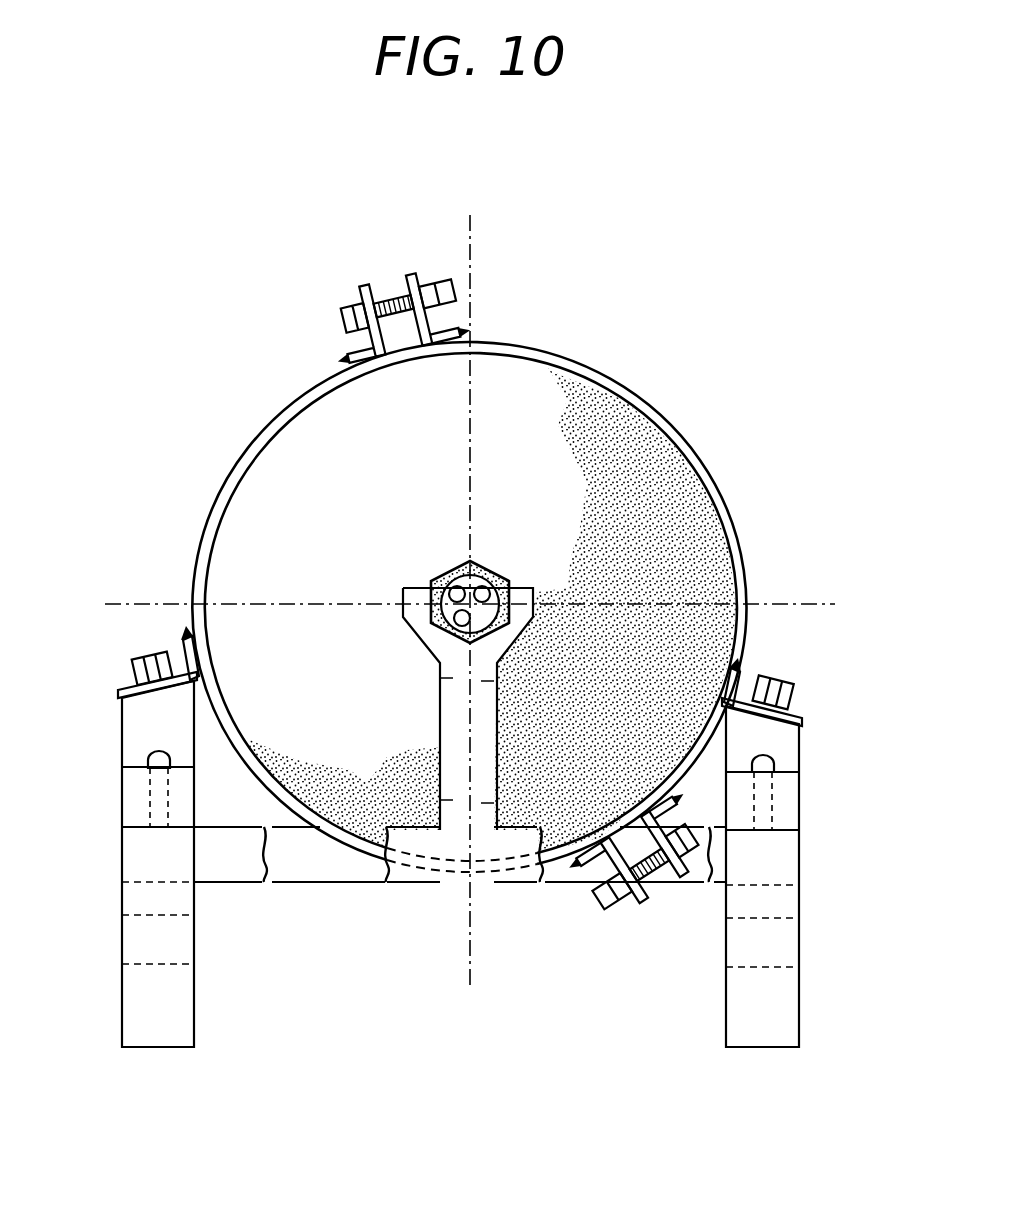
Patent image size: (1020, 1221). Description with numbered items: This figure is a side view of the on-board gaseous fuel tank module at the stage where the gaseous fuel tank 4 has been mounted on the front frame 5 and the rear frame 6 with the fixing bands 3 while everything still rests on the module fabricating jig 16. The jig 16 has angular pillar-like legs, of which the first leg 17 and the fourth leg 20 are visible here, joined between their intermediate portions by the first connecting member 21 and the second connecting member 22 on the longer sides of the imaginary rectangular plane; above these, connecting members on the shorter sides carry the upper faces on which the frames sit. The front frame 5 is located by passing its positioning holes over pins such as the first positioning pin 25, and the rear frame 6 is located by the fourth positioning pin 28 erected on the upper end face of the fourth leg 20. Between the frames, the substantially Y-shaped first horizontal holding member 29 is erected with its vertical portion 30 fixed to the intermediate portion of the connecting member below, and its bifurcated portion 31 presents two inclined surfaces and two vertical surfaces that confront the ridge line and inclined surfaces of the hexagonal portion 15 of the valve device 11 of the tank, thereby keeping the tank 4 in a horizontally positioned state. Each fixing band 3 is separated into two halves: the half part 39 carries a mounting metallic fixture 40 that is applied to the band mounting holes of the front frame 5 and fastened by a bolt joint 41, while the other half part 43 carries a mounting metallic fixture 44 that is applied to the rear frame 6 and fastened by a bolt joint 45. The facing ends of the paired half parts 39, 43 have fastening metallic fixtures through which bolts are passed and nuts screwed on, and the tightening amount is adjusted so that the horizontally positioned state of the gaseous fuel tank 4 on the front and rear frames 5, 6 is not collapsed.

The fixing band 3 is at (622, 359).
The gaseous fuel tank 4 is at (696, 460).
The front frame 5 is at (118, 728).
The rear frame 6 is at (808, 740).
The valve device 11 is at (446, 564).
The hexagonal portion 15 is at (494, 569).
The module fabricating jig 16 is at (811, 920).
The first leg 17 is at (130, 1004).
The fourth leg 20 is at (798, 1012).
The first connecting member 21 is at (130, 940).
The second connecting member 22 is at (798, 950).
The first positioning pin 25 is at (148, 762).
The fourth positioning pin 28 is at (774, 767).
The first horizontal holding member 29 is at (436, 703).
The vertical portion 30 is at (488, 767).
The bifurcated portion 31 is at (545, 589).
The half part 39 is at (256, 437).
The mounting metallic fixture 40 is at (121, 688).
The bolt joint 41 is at (148, 662).
The half part 43 is at (733, 504).
The mounting metallic fixture 44 is at (803, 716).
The bolt joint 45 is at (776, 690).